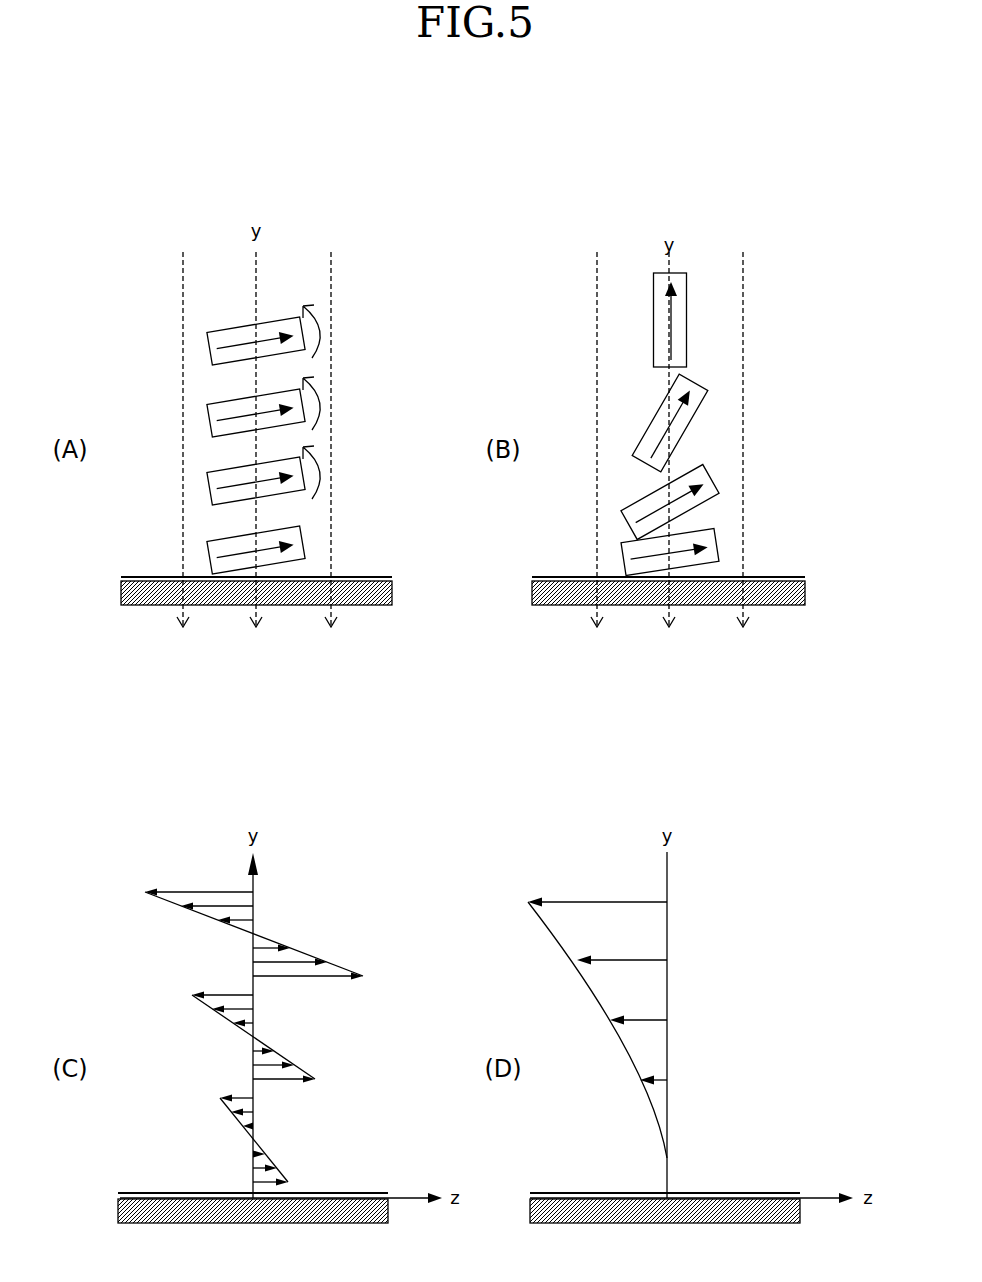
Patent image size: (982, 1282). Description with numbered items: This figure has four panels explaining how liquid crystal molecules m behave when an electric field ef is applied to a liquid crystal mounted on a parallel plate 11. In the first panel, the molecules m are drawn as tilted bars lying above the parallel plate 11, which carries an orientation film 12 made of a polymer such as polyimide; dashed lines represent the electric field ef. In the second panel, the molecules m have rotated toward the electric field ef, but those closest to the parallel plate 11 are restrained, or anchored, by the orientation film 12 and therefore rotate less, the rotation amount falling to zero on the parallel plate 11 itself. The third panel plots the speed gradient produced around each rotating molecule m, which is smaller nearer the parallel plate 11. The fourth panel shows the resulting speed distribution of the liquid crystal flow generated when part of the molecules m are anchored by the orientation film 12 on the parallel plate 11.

The parallel plate 11 is at (337, 577).
The orientation film 12 is at (357, 577).
The liquid crystal molecule m is at (287, 350).
The electric field ef is at (183, 289).